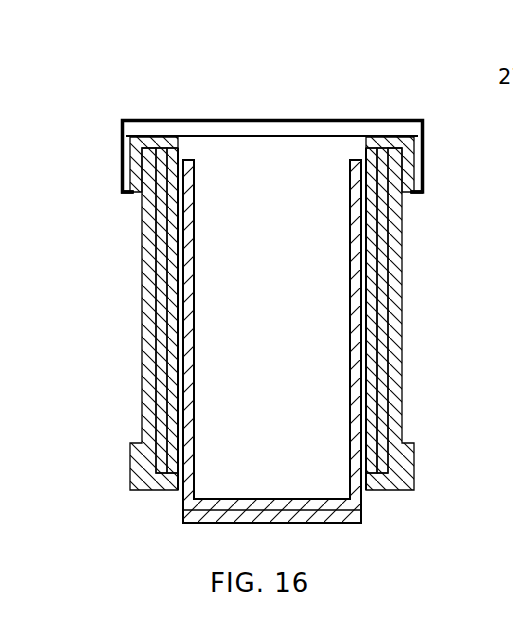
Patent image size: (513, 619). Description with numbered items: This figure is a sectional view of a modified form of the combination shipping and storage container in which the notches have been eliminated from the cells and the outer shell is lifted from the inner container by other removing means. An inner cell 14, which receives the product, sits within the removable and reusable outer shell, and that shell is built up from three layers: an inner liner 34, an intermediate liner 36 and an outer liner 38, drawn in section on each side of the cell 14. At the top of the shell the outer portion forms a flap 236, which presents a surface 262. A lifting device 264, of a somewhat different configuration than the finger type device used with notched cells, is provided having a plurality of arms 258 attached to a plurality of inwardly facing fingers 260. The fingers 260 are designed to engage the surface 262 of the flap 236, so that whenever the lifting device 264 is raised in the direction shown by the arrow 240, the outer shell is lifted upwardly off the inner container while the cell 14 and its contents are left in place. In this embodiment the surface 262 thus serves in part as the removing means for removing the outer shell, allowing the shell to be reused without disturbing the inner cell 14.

The inner cell 14 is at (281, 356).
The inner liner 34 is at (170, 417).
The intermediate liner 36 is at (158, 376).
The outer liner 38 is at (145, 332).
The flap 236 is at (130, 160).
The arrow 240 is at (275, 118).
The arms 258 is at (121, 142).
The inwardly facing fingers 260 is at (128, 194).
The surface 262 is at (131, 180).
The lifting device 264 is at (371, 91).